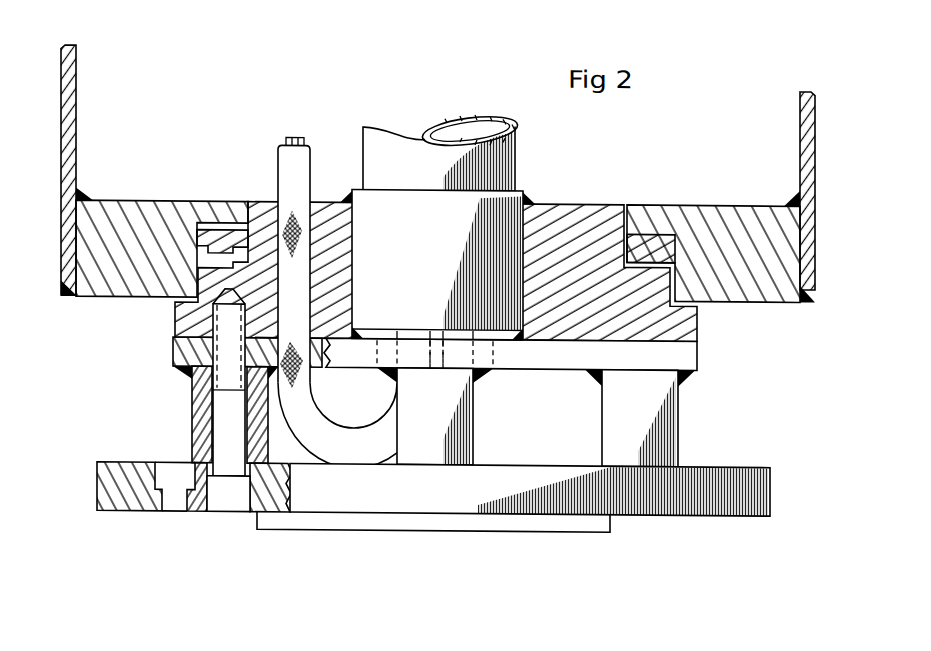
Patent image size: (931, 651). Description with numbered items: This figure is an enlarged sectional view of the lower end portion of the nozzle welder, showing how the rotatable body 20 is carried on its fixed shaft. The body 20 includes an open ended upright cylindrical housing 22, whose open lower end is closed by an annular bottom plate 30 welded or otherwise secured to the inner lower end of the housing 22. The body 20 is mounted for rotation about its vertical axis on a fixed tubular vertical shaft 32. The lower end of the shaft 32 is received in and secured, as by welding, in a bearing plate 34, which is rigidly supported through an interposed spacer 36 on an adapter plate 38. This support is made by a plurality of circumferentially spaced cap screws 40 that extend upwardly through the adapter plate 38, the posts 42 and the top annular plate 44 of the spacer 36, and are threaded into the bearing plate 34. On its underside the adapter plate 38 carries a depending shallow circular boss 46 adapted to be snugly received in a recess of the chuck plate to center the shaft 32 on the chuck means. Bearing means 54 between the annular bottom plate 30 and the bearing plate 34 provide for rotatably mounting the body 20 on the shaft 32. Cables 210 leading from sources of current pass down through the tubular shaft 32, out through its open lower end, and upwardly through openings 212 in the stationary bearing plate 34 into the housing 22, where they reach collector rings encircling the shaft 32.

The body 20 is at (817, 107).
The cylindrical housing 22 is at (815, 167).
The annular bottom plate 30 is at (778, 300).
The tubular vertical shaft 32 is at (512, 170).
The bearing plate 34 is at (697, 328).
The spacer 36 is at (679, 421).
The adapter plate 38 is at (757, 514).
The cap screws 40 is at (222, 515).
The posts 42 is at (266, 436).
The top annular plate 44 is at (173, 358).
The circular boss 46 is at (608, 534).
The bearing means 54 is at (225, 245).
The cables 210 is at (277, 180).
The openings 212 is at (310, 371).